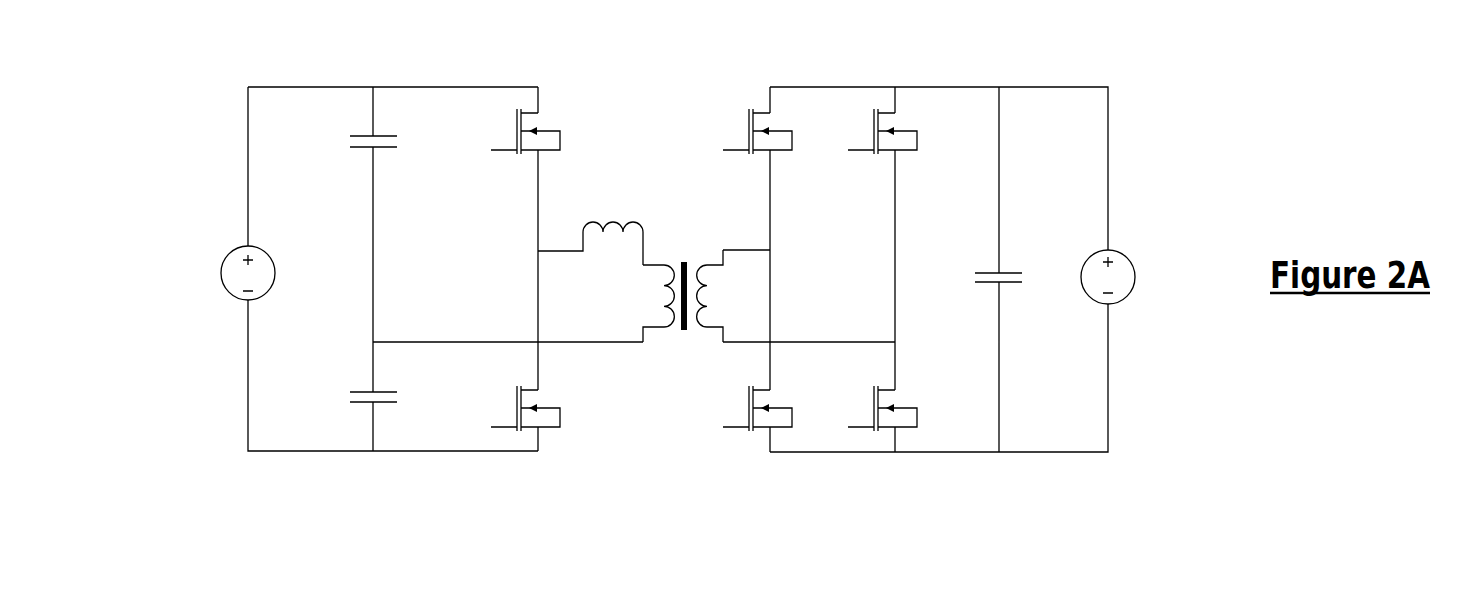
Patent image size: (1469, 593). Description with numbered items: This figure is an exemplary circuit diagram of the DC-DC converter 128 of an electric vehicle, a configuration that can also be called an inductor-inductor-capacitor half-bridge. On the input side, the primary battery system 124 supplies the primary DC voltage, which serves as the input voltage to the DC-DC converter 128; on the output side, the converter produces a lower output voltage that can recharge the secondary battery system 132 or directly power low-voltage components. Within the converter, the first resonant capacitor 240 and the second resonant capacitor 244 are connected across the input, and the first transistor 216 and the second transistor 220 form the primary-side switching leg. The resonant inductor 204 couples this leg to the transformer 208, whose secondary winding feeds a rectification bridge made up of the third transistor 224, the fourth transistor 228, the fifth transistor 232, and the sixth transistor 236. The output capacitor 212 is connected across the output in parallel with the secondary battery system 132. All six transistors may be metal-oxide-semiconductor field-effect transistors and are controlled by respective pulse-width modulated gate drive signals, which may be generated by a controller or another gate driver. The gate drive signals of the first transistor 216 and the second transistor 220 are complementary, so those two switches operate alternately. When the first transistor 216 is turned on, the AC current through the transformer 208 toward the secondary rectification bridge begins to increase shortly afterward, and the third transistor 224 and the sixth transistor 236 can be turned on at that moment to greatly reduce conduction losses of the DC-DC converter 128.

The DC-DC converter 128 is at (1190, 72).
The primary battery system 124 is at (229, 258).
The secondary battery system 132 is at (1128, 298).
The capacitor CR1 240 is at (352, 158).
The capacitor CR2 244 is at (352, 380).
The capacitor CO 212 is at (1012, 263).
The transistor T1 216 is at (557, 103).
The transistor T2 220 is at (567, 437).
The transistor T3 224 is at (737, 103).
The transistor T4 228 is at (735, 437).
The transistor T5 232 is at (870, 167).
The transistor T6 236 is at (917, 382).
The resonant inductor LR 204 is at (648, 223).
The transformer 208 is at (676, 337).